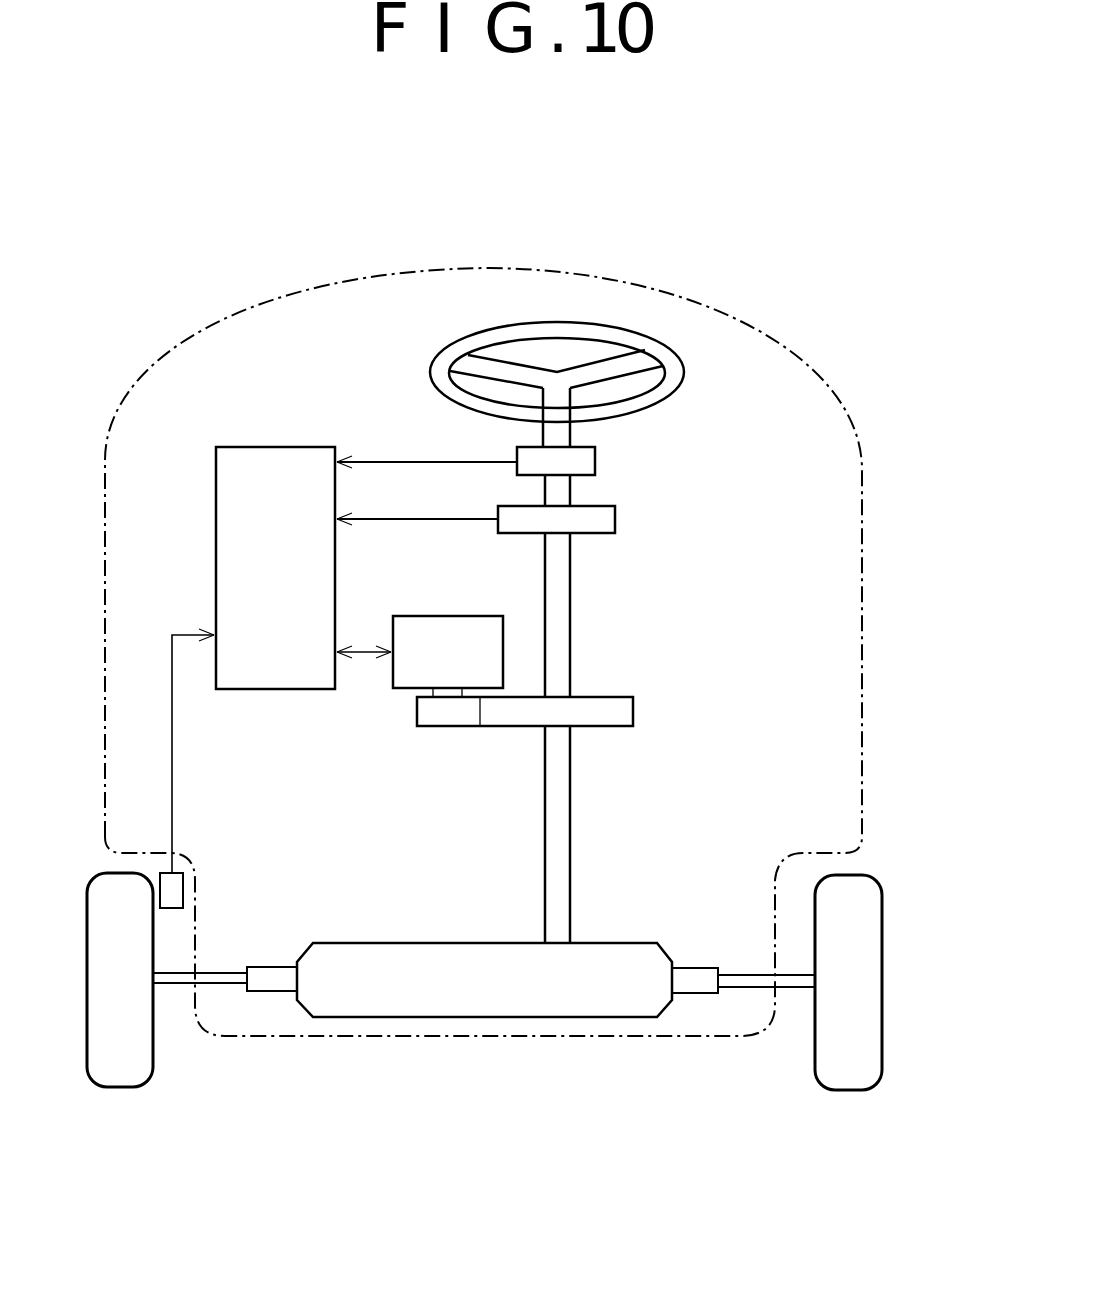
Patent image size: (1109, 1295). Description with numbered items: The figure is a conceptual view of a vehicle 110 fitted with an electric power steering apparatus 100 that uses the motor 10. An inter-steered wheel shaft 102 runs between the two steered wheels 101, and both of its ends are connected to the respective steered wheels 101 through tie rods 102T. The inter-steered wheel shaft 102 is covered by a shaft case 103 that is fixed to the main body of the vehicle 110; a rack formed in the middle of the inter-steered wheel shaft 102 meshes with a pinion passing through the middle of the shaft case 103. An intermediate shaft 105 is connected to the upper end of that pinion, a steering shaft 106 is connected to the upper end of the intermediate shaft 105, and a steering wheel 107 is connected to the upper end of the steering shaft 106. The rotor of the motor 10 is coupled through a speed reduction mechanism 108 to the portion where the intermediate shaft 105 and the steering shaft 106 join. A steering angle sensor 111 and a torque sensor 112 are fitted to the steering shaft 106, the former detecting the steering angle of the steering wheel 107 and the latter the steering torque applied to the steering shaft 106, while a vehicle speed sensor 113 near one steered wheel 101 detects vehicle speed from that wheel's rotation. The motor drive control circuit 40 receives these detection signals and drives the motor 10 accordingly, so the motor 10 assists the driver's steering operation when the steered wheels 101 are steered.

The motor 10 is at (390, 677).
The motor drive control circuit 40 is at (216, 497).
The electric power steering apparatus 100 is at (527, 756).
The steered wheels 101 is at (123, 1065).
The inter-steered wheel shaft 102 is at (272, 991).
The tie rods 102T is at (178, 977).
The shaft case 103 is at (483, 1017).
The intermediate shaft 105 is at (567, 822).
The steering shaft 106 is at (567, 603).
The steering wheel 107 is at (684, 372).
The speed reduction mechanism 108 is at (448, 732).
The vehicle 110 is at (695, 303).
The steering angle sensor 111 is at (595, 462).
The torque sensor 112 is at (615, 518).
The vehicle speed sensor 113 is at (183, 890).